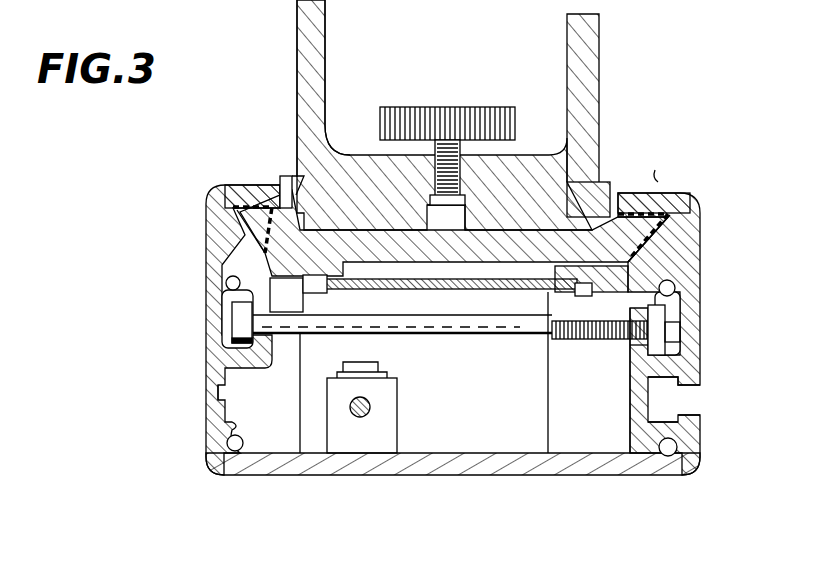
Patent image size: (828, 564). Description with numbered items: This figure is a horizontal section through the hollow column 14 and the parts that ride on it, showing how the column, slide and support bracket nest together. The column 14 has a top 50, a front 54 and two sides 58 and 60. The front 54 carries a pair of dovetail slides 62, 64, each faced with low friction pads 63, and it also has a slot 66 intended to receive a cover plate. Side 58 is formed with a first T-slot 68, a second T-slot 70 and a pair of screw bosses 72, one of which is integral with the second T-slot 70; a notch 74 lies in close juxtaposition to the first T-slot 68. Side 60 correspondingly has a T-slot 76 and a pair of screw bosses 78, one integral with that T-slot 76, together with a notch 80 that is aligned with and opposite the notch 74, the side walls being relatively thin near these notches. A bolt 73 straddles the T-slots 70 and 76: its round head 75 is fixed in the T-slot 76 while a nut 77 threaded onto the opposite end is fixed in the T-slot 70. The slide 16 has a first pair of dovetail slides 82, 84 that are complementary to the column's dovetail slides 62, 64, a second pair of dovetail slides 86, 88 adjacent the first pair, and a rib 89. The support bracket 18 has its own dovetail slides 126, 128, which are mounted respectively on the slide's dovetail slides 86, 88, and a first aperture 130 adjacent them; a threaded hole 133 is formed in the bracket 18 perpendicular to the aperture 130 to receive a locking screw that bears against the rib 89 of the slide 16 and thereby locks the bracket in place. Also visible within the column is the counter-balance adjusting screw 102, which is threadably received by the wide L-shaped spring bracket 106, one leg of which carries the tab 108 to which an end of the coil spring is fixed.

The column 14 is at (212, 385).
The slide 16 is at (390, 275).
The support bracket 18 is at (600, 35).
The top 50 is at (700, 258).
The front 54 is at (668, 165).
The side 58 is at (700, 355).
The side 60 is at (210, 450).
The dovetail slide 62 is at (690, 237).
The low friction pads 63 is at (235, 215).
The dovetail slide 64 is at (230, 232).
The slot 66 is at (345, 245).
The first T-slot 68 is at (670, 395).
The second T-slot 70 is at (650, 302).
The screw bosses 72 is at (700, 282).
The bolt 73 is at (527, 335).
The notch 74 is at (635, 400).
The round head 75 is at (240, 322).
The T-slot 76 is at (235, 340).
The nut 77 is at (700, 318).
The screw bosses 78 is at (226, 280).
The notch 80 is at (212, 402).
The dovetail slide 82 is at (262, 188).
The dovetail slide 84 is at (680, 195).
The dovetail slide 86 is at (298, 172).
The dovetail slide 88 is at (598, 188).
The rib 89 is at (465, 205).
The counter-balance adjusting screw 102 is at (372, 405).
The spring bracket 106 is at (392, 375).
The tab 108 is at (350, 365).
The dovetail slide 126 is at (330, 180).
The dovetail slide 128 is at (570, 218).
The first aperture 130 is at (328, 52).
The threaded hole 133 is at (432, 168).